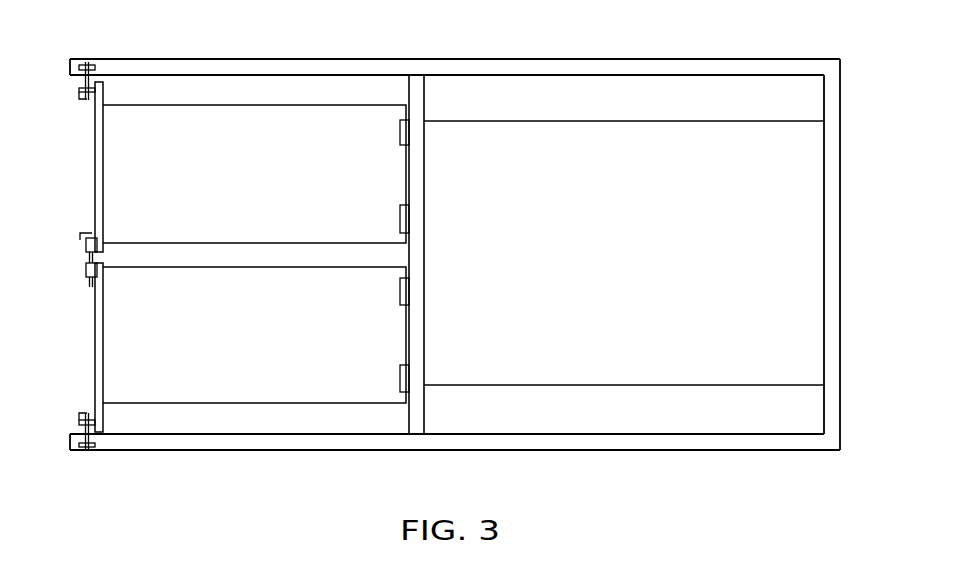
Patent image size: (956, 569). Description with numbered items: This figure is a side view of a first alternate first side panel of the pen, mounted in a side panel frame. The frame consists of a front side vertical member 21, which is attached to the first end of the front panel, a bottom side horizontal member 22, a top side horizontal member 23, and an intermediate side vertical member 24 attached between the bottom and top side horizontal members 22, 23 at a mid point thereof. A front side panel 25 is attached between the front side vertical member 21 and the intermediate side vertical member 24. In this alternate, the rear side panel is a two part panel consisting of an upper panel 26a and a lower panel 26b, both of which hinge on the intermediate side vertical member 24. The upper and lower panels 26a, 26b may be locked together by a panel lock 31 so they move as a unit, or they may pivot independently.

The front side vertical member 21 is at (841, 202).
The bottom side horizontal member 22 is at (585, 450).
The top side horizontal member 23 is at (646, 58).
The intermediate side vertical member 24 is at (426, 412).
The front side panel 25 is at (683, 373).
The upper panel 26a is at (112, 160).
The lower panel 26b is at (110, 358).
The panel lock 31 is at (88, 258).